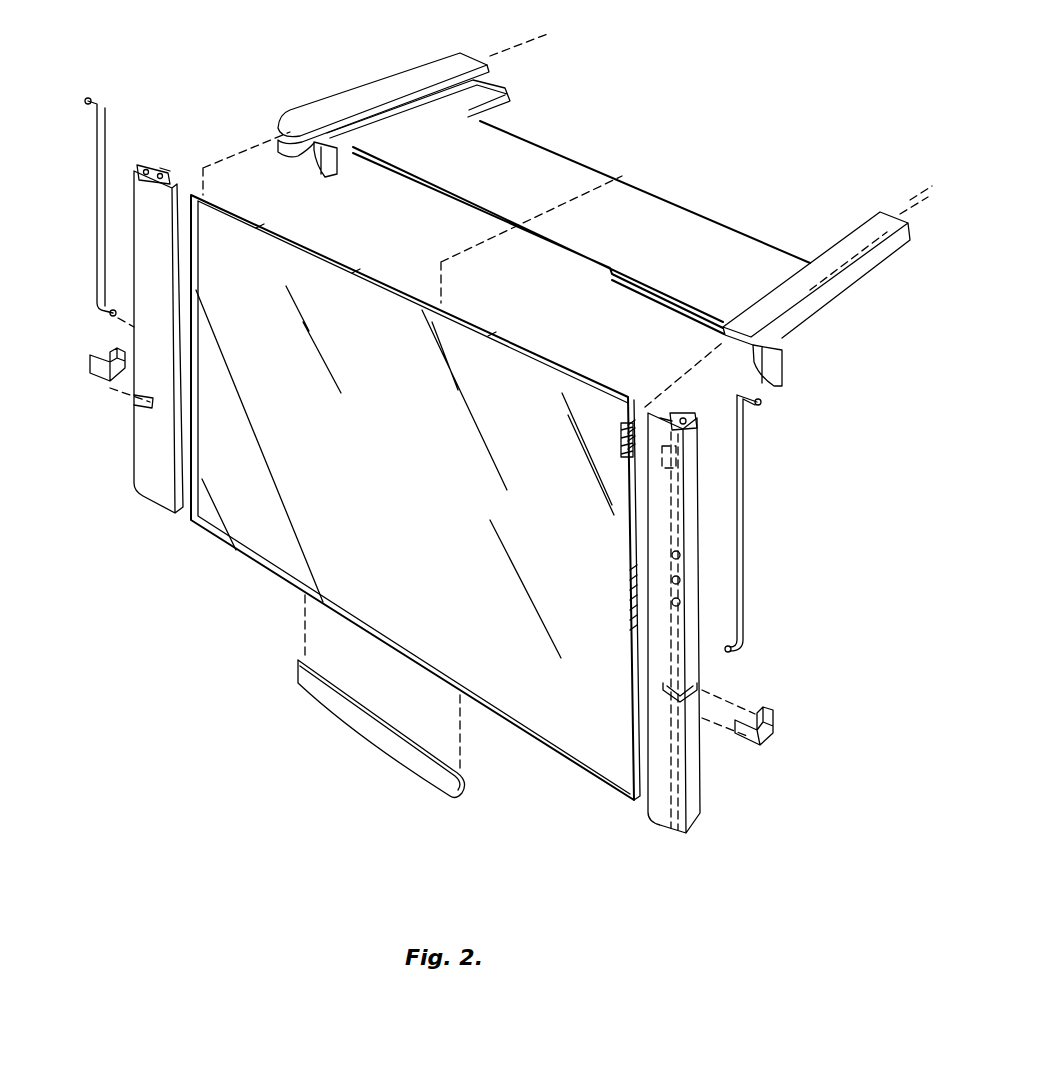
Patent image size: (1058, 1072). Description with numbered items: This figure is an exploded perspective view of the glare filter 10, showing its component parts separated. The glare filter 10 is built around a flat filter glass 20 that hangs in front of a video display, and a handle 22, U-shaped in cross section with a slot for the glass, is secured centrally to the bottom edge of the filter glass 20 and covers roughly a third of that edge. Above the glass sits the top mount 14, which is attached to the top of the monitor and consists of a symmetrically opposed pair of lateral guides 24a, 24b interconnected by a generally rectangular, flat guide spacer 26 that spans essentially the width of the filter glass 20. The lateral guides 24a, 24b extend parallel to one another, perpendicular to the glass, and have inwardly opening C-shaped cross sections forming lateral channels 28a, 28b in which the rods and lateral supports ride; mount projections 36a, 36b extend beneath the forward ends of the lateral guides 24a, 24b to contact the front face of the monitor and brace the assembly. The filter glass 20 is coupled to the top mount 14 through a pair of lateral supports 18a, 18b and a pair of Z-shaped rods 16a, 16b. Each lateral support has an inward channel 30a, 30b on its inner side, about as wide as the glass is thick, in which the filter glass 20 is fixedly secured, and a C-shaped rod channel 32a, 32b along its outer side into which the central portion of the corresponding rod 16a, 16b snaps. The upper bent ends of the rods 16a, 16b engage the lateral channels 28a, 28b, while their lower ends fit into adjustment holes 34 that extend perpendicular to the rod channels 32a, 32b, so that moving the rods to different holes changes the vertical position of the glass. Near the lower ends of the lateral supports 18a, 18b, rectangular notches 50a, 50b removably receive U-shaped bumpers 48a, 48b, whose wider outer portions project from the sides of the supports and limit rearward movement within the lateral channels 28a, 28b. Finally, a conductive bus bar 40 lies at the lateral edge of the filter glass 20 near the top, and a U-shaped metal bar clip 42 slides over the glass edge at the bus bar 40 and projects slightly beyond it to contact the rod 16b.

The glare filter 10 is at (186, 742).
The top mount 14 is at (632, 188).
The rod 16a is at (95, 100).
The rod 16b is at (745, 473).
The lateral support 18a is at (160, 497).
The lateral support 18b is at (705, 805).
The filter glass 20 is at (392, 510).
The handle 22 is at (388, 755).
The lateral guide 24a is at (380, 85).
The lateral guide 24b is at (884, 210).
The guide spacer 26 is at (724, 228).
The lateral channel 28a is at (493, 78).
The lateral channel 28b is at (822, 276).
The inward channel 30a is at (168, 168).
The inward channel 30b is at (667, 413).
The rod channel 32a is at (142, 166).
The rod channel 32b is at (686, 420).
The adjustment holes 34 is at (681, 557).
The mount projection 36a is at (326, 176).
The mount projection 36b is at (785, 374).
The bus bar 40 is at (622, 433).
The bar clip 42 is at (702, 455).
The bumper 48a is at (96, 380).
The bumper 48b is at (778, 728).
The notch 50a is at (143, 410).
The notch 50b is at (708, 696).